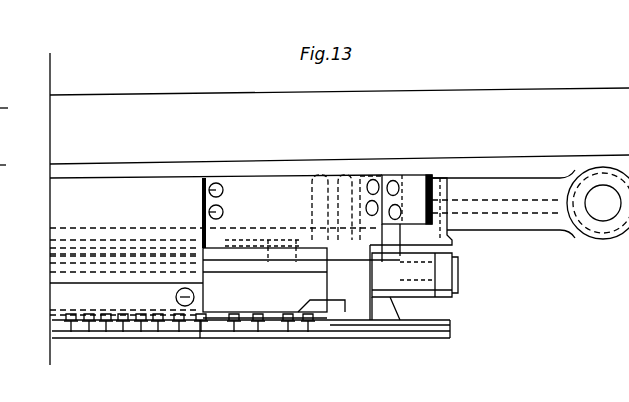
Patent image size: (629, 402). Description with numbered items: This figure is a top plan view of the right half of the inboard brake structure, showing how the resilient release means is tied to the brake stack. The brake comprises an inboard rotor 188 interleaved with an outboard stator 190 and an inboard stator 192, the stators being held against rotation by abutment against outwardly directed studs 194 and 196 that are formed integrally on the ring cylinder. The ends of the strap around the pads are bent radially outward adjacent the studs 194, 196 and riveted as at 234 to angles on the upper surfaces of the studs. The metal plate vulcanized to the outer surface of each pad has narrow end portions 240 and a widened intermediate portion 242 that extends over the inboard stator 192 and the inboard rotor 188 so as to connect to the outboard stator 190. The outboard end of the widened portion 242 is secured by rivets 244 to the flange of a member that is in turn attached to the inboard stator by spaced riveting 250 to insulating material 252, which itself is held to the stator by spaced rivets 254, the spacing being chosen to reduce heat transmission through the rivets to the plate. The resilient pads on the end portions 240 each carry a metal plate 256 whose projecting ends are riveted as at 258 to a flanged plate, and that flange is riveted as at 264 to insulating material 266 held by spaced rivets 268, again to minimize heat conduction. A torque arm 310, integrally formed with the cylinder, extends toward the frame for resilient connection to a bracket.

The inboard rotor 188 is at (298, 333).
The outboard stator 190 is at (450, 325).
The inboard stator 192 is at (50, 263).
The outwardly directed studs 194 is at (345, 300).
The outwardly directed studs 196 is at (458, 290).
The rivets 234 is at (395, 180).
The narrow end portions 240 is at (246, 190).
The widened intermediate portion 242 is at (301, 283).
The rivets 244 is at (176, 297).
The riveting 250 is at (72, 340).
The insulating material 252 is at (205, 340).
The spaced rivets 254 is at (160, 340).
The metal plate 256 is at (366, 185).
The rivets 258 is at (204, 194).
The riveting 264 is at (284, 246).
The insulating material 266 is at (50, 254).
The spaced rivets 268 is at (296, 264).
The torque arm 310 is at (525, 230).